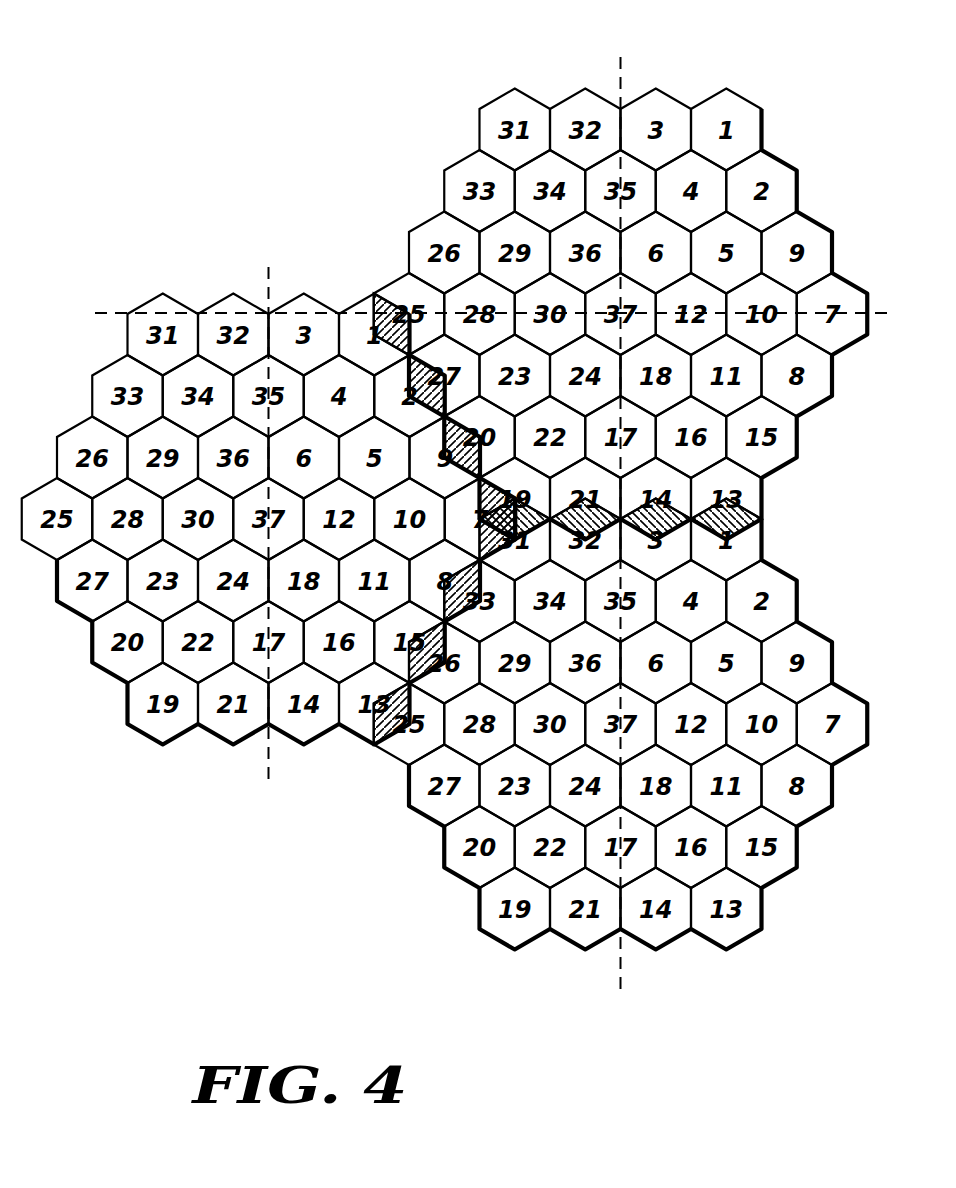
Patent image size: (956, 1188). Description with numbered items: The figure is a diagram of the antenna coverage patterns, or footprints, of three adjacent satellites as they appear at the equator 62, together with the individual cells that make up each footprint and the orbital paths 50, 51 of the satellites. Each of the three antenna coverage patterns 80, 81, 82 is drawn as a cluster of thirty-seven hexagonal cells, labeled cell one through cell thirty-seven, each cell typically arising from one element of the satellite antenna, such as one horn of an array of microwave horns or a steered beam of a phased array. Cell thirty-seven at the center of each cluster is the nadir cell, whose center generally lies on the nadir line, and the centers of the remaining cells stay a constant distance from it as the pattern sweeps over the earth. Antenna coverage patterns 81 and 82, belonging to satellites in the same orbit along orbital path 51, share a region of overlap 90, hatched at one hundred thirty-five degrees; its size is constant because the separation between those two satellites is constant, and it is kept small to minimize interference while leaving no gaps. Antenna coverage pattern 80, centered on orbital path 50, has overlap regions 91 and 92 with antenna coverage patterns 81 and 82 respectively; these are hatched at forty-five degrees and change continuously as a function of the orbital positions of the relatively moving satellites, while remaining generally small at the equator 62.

The orbital path 50 is at (268, 267).
The orbital path 51 is at (621, 57).
The equator 62 is at (101, 313).
The antenna coverage pattern 80 is at (207, 804).
The antenna coverage pattern 81 is at (383, 875).
The antenna coverage pattern 82 is at (402, 149).
The region of overlap 90 is at (762, 519).
The overlap region 91 is at (384, 746).
The overlap region 92 is at (382, 295).